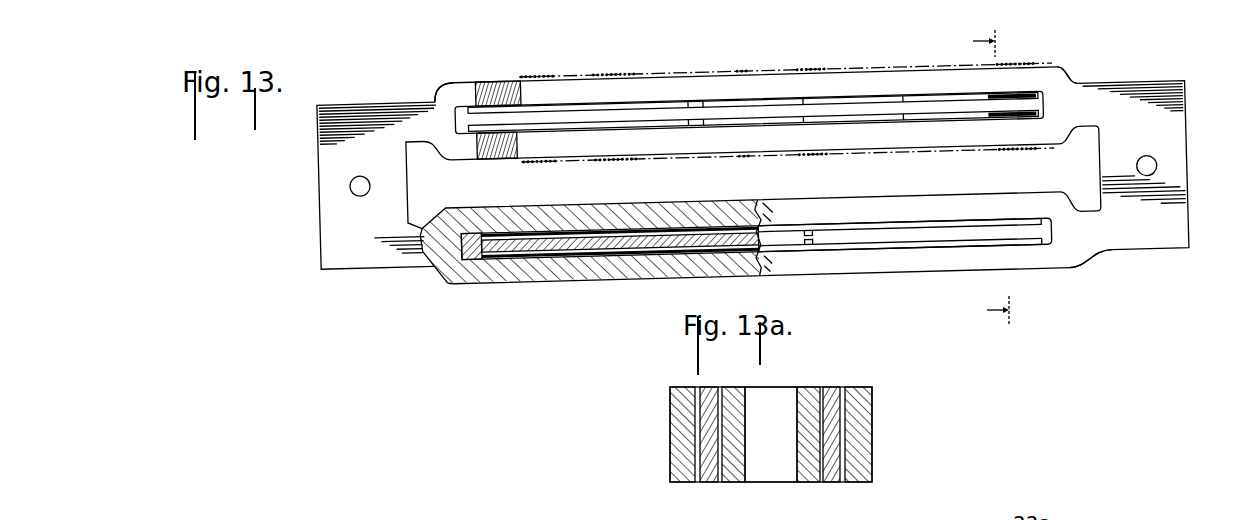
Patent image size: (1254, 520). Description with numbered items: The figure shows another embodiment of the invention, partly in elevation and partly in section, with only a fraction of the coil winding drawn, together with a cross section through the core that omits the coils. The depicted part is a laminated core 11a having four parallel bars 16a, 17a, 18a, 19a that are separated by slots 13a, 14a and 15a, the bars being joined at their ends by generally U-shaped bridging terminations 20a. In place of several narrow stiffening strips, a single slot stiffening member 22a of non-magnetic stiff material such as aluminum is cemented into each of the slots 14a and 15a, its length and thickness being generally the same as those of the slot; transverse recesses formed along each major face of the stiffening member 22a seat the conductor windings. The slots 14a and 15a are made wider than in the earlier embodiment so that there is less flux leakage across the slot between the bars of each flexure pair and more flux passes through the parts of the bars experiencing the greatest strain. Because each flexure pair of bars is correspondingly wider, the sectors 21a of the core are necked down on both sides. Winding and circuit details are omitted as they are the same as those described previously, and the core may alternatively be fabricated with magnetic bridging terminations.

In FIG. 13, the core 11a is at (318, 198).
In FIG. 13, the slot 13a is at (878, 187).
In FIG. 13A, the slot 13a is at (787, 436).
In FIG. 13, the slot 14a is at (757, 103).
In FIG. 13, the slot 15a is at (787, 262).
In FIG. 13, the bar 16a is at (657, 92).
In FIG. 13A, the bar 16a is at (674, 479).
In FIG. 13, the bar 17a is at (988, 257).
In FIG. 13A, the bar 17a is at (873, 472).
In FIG. 13, the bar 18a is at (667, 140).
In FIG. 13A, the bar 18a is at (728, 482).
In FIG. 13, the bar 19a is at (787, 207).
In FIG. 13A, the bar 19a is at (810, 482).
In FIG. 13, the bridging termination 20a is at (1177, 158).
In FIG. 13A, the bridging termination 20a is at (782, 386).
In FIG. 13, the sector 21a is at (412, 130).
In FIG. 13, the slot stiffening member 22a is at (545, 120).
In FIG. 13A, the slot stiffening member 22a is at (700, 425).